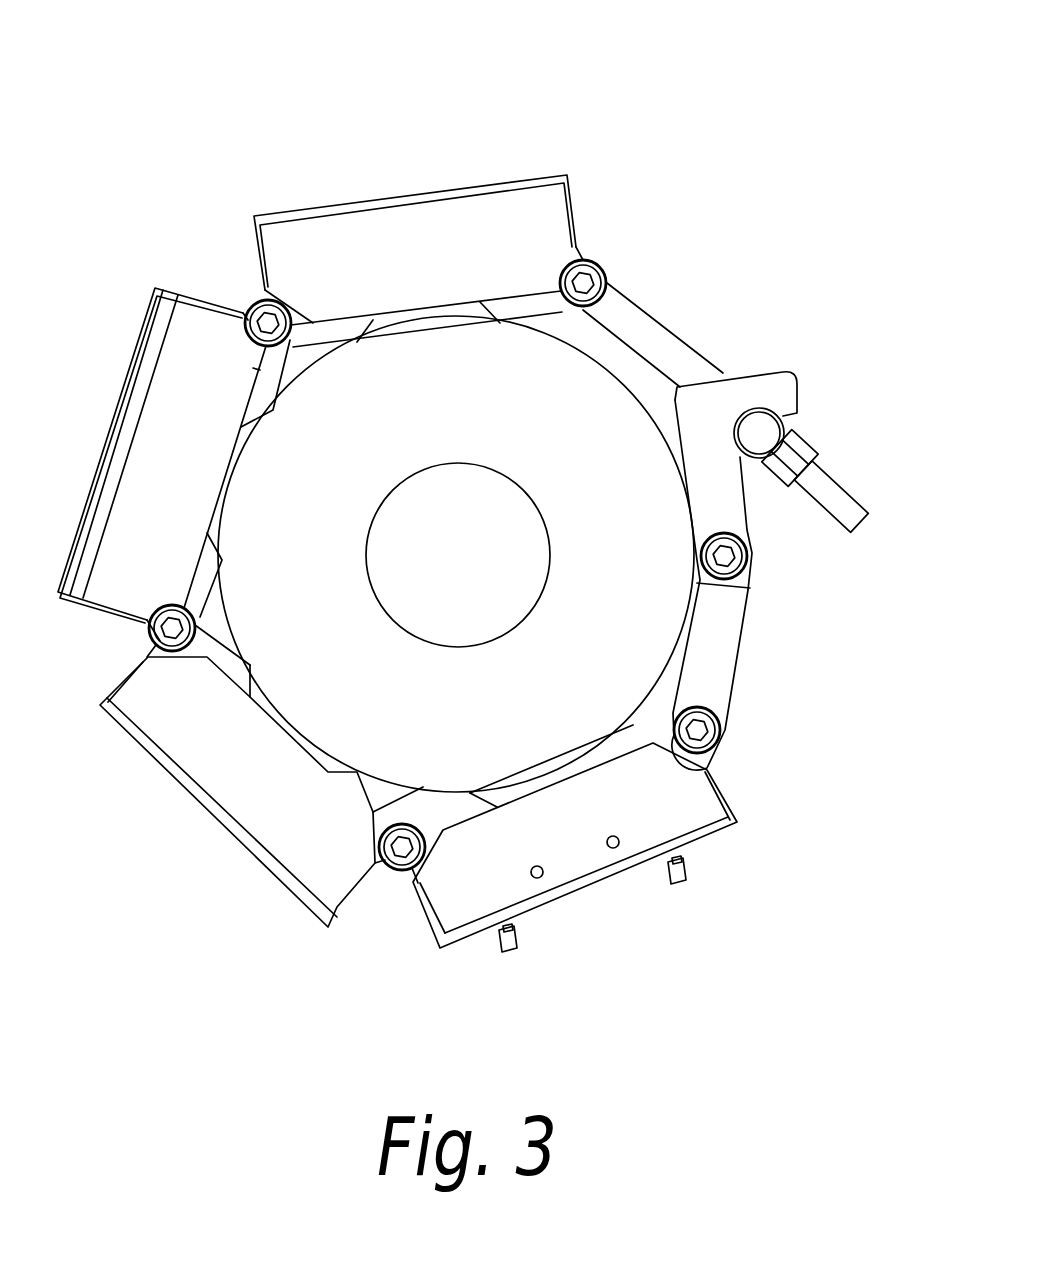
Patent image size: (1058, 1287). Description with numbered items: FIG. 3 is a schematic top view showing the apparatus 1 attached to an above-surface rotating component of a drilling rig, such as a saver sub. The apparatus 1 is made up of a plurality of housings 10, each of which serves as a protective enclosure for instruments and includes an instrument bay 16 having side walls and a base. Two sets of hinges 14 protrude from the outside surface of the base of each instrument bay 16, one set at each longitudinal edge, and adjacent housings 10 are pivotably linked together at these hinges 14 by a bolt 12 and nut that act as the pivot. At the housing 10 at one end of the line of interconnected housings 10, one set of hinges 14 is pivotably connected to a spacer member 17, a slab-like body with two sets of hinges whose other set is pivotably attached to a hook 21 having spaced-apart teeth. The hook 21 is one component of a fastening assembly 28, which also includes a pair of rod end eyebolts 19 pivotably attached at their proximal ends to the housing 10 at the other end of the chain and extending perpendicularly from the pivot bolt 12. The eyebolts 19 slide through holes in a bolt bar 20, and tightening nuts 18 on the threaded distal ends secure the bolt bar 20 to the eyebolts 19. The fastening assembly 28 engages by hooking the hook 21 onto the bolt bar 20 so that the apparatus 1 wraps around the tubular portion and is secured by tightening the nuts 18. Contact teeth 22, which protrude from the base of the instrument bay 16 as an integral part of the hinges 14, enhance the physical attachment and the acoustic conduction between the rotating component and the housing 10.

The housing 10 is at (496, 489).
The instrument bay 16 is at (434, 184).
The bolt 12 is at (648, 224).
The rod end eyebolt 19 is at (685, 296).
The fastening assembly 28 is at (759, 476).
The hook 21 is at (786, 361).
The bolt bar 20 is at (828, 419).
The tightening nut 18 is at (810, 438).
The spacer member 17 is at (758, 585).
The contact teeth 22 is at (456, 554).
The hinge 14 is at (448, 512).
The apparatus 1 is at (873, 950).